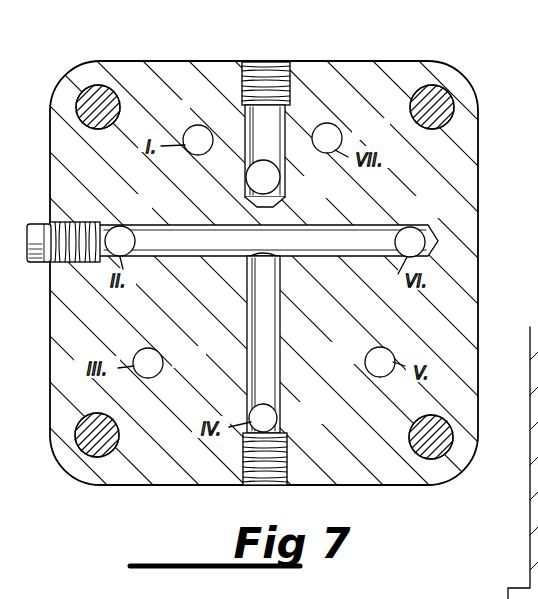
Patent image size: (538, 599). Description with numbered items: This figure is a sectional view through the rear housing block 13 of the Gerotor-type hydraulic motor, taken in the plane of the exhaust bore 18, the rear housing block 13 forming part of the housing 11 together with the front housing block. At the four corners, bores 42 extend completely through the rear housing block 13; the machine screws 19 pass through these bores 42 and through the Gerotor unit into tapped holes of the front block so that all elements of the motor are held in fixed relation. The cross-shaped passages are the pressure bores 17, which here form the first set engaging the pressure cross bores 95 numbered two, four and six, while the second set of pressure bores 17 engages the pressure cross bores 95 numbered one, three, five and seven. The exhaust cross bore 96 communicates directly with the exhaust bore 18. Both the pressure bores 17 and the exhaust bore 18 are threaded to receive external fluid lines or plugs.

The housing 11 is at (466, 62).
The rear housing block 13 is at (345, 97).
The pressure bores 17 is at (206, 252).
The exhaust bore 18 is at (286, 119).
The machine screws 19 is at (83, 92).
The bores 42 is at (93, 87).
The pressure cross bores 95 is at (200, 127).
The exhaust cross bore 96 is at (280, 177).